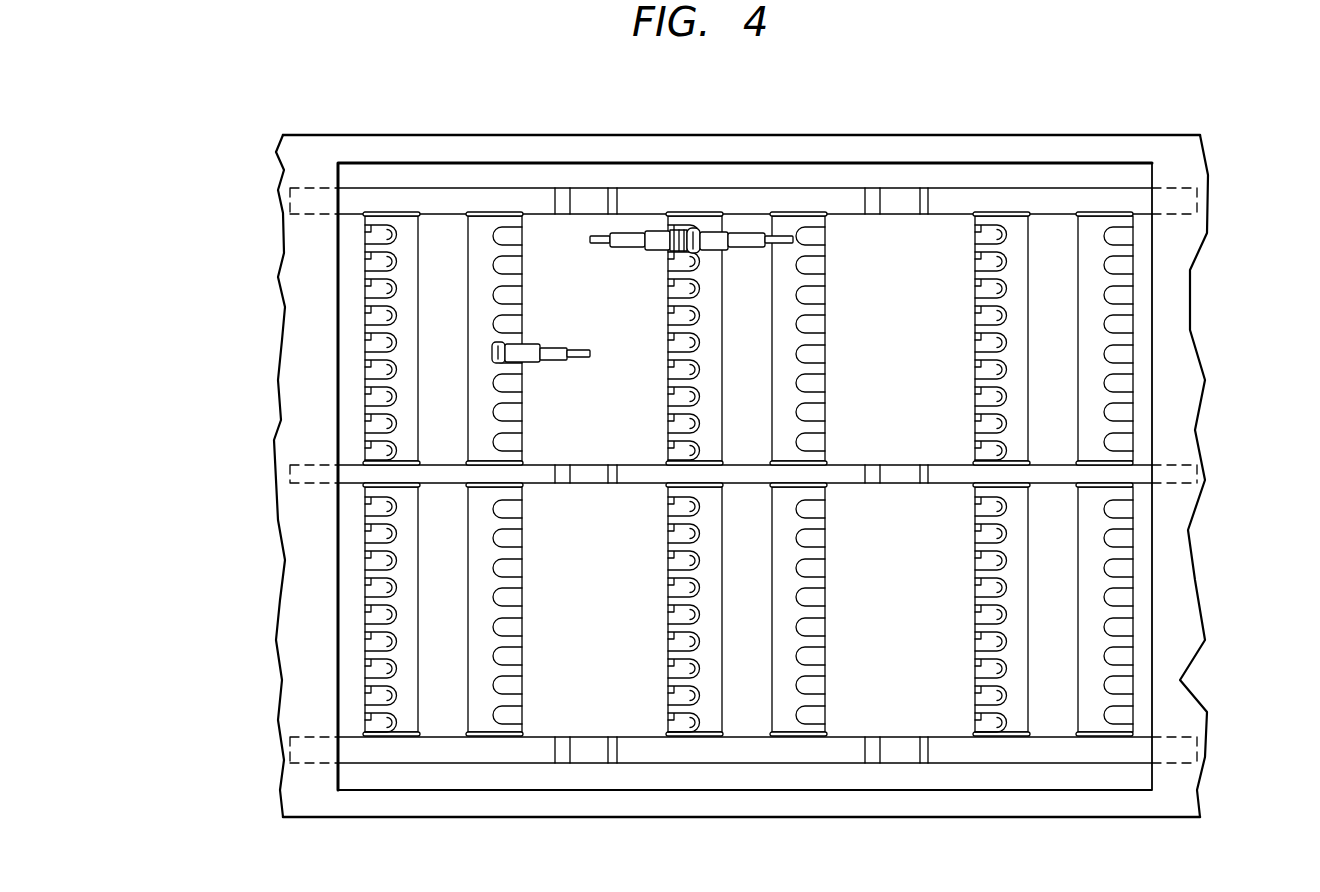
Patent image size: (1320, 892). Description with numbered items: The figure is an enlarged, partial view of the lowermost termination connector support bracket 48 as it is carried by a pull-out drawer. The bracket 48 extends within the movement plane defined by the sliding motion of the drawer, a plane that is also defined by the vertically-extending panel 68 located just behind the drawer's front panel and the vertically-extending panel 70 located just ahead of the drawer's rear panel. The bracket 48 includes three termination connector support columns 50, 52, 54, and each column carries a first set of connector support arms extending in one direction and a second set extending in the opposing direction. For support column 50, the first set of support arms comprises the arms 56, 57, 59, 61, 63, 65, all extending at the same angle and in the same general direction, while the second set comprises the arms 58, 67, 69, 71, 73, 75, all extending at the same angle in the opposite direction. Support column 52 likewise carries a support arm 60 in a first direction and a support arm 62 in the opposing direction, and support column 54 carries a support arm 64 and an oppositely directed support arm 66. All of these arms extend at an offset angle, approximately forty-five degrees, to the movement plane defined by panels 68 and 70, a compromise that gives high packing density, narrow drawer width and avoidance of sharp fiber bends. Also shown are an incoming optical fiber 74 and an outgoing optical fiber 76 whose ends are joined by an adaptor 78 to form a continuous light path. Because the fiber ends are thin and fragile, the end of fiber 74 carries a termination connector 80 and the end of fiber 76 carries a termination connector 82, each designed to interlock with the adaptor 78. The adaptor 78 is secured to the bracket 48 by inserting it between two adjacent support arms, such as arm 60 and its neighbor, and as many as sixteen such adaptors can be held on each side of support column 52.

The termination connector support bracket 48 is at (740, 432).
The support column 50 is at (447, 232).
The support column 52 is at (752, 222).
The support column 54 is at (1050, 235).
The support arm 56 is at (365, 255).
The support arm 57 is at (365, 228).
The support arm 58 is at (518, 256).
The support arm 59 is at (365, 282).
The support arm 60 is at (670, 231).
The support arm 61 is at (365, 309).
The support arm 62 is at (827, 248).
The support arm 63 is at (365, 498).
The support arm 64 is at (977, 255).
The support arm 65 is at (365, 526).
The support arm 66 is at (1128, 250).
The support arm 67 is at (518, 228).
The vertically-extending panel 68 is at (300, 408).
The support arm 69 is at (518, 285).
The vertically-extending panel 70 is at (1170, 532).
The support arm 71 is at (518, 313).
The support arm 73 is at (515, 498).
The incoming optical fiber 74 is at (779, 245).
The support arm 75 is at (515, 526).
The outgoing optical fiber 76 is at (602, 246).
The adaptor 78 is at (700, 229).
The termination connector 80 is at (718, 250).
The termination connector 82 is at (648, 232).